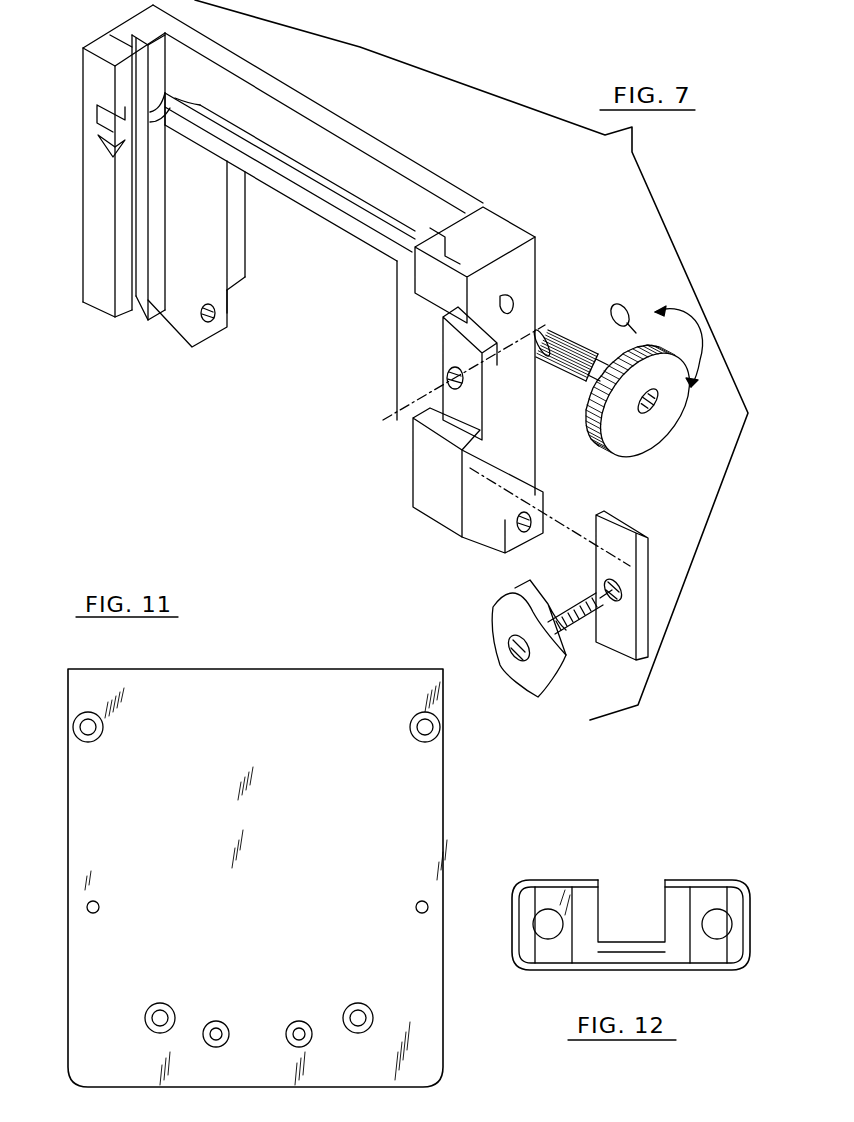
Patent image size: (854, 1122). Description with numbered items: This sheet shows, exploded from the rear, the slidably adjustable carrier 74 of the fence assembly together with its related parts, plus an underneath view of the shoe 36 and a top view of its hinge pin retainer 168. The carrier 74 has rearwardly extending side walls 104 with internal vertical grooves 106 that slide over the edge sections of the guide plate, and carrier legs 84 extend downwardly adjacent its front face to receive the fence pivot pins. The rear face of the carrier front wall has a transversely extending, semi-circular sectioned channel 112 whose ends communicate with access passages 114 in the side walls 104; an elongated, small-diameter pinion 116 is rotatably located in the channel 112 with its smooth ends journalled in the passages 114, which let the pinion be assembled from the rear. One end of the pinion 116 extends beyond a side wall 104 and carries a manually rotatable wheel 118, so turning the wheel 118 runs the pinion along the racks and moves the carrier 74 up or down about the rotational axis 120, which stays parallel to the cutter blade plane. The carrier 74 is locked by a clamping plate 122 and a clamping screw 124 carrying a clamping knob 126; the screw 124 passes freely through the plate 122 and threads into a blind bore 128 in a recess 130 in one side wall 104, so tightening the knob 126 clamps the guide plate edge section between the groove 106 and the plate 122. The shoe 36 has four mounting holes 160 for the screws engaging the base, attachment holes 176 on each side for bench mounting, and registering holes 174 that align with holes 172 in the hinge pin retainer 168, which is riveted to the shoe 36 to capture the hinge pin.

In FIG. 7, the carrier 74 is at (300, 352).
In FIG. 7, the side walls 104 is at (118, 36).
In FIG. 7, the access passages 114 is at (112, 120).
In FIG. 7, the vertical grooves 106 is at (130, 215).
In FIG. 7, the channel 112 is at (304, 182).
In FIG. 7, the carrier legs 84 is at (185, 340).
In FIG. 7, the recess 130 is at (485, 420).
In FIG. 7, the blind bore 128 is at (450, 378).
In FIG. 7, the rotational axis 120 is at (530, 310).
In FIG. 7, the pinion 116 is at (584, 330).
In FIG. 7, the wheel 118 is at (648, 422).
In FIG. 7, the clamping plate 122 is at (600, 575).
In FIG. 7, the clamping knob 126 is at (507, 627).
In FIG. 7, the clamping screw 124 is at (583, 628).
In FIG. 11, the shoe 36 is at (255, 657).
In FIG. 11, the mounting holes 160 is at (75, 727).
In FIG. 11, the attachment holes 176 is at (97, 902).
In FIG. 11, the registering holes 174 is at (291, 1024).
In FIG. 12, the hinge pin retainer 168 is at (690, 866).
In FIG. 12, the holes 172 is at (543, 910).